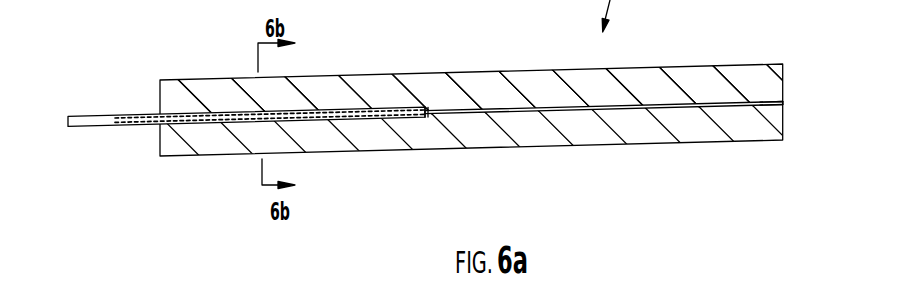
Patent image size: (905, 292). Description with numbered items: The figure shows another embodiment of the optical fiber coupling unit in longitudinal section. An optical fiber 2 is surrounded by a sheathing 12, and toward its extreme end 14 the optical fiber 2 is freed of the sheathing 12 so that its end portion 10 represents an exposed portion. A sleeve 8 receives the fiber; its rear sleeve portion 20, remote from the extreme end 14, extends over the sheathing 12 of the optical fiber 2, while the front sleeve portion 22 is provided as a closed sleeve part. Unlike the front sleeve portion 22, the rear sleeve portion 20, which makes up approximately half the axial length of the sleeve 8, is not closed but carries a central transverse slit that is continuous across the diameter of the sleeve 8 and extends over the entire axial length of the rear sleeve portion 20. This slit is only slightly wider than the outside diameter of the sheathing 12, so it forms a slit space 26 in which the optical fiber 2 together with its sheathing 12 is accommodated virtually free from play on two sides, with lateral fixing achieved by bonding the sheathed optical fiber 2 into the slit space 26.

The optical fiber 2 is at (733, 105).
The sleeve 8 is at (625, 127).
The end portion 10 is at (513, 113).
The sheathing 12 is at (98, 121).
The extreme end 14 is at (783, 104).
The rear sleeve portion 20 is at (340, 138).
The front sleeve portion 22 is at (640, 83).
The slit space 26 is at (429, 117).